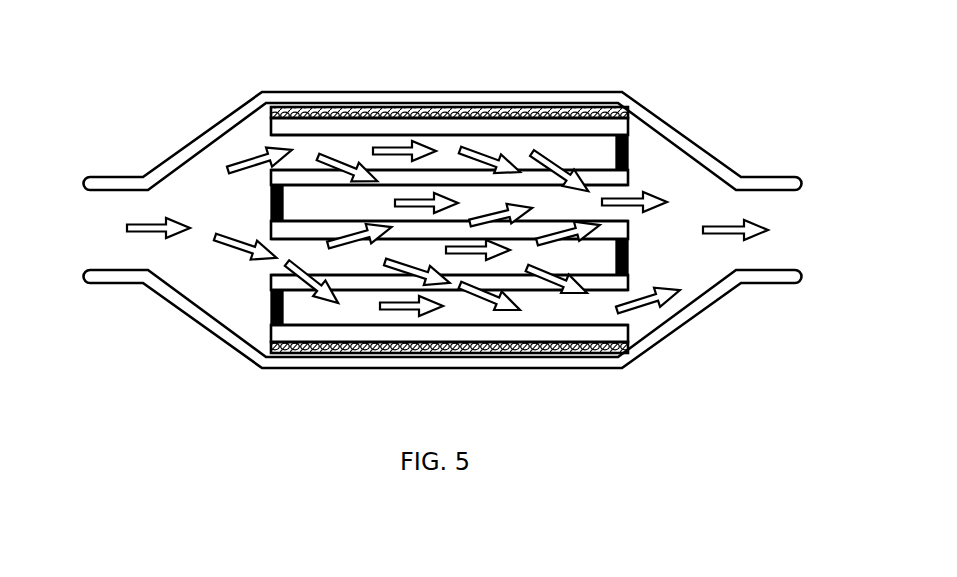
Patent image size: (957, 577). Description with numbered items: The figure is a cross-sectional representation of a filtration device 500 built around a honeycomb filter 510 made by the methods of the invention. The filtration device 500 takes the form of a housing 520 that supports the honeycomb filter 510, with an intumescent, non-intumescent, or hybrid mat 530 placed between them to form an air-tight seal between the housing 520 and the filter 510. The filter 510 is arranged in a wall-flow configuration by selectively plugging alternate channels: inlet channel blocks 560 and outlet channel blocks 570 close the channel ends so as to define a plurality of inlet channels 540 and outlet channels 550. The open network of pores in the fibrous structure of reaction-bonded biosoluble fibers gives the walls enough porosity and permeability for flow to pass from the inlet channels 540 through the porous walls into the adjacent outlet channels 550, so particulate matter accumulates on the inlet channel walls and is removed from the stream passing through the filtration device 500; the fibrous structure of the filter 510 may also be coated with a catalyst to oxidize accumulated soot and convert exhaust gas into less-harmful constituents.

The filtration device 500 is at (713, 82).
The honeycomb filter 510 is at (305, 178).
The housing 520 is at (221, 124).
The mat 530 is at (506, 105).
The inlet channels 540 is at (586, 152).
The outlet channels 550 is at (482, 197).
The inlet channel blocks 560 is at (630, 148).
The outlet channel blocks 570 is at (270, 207).